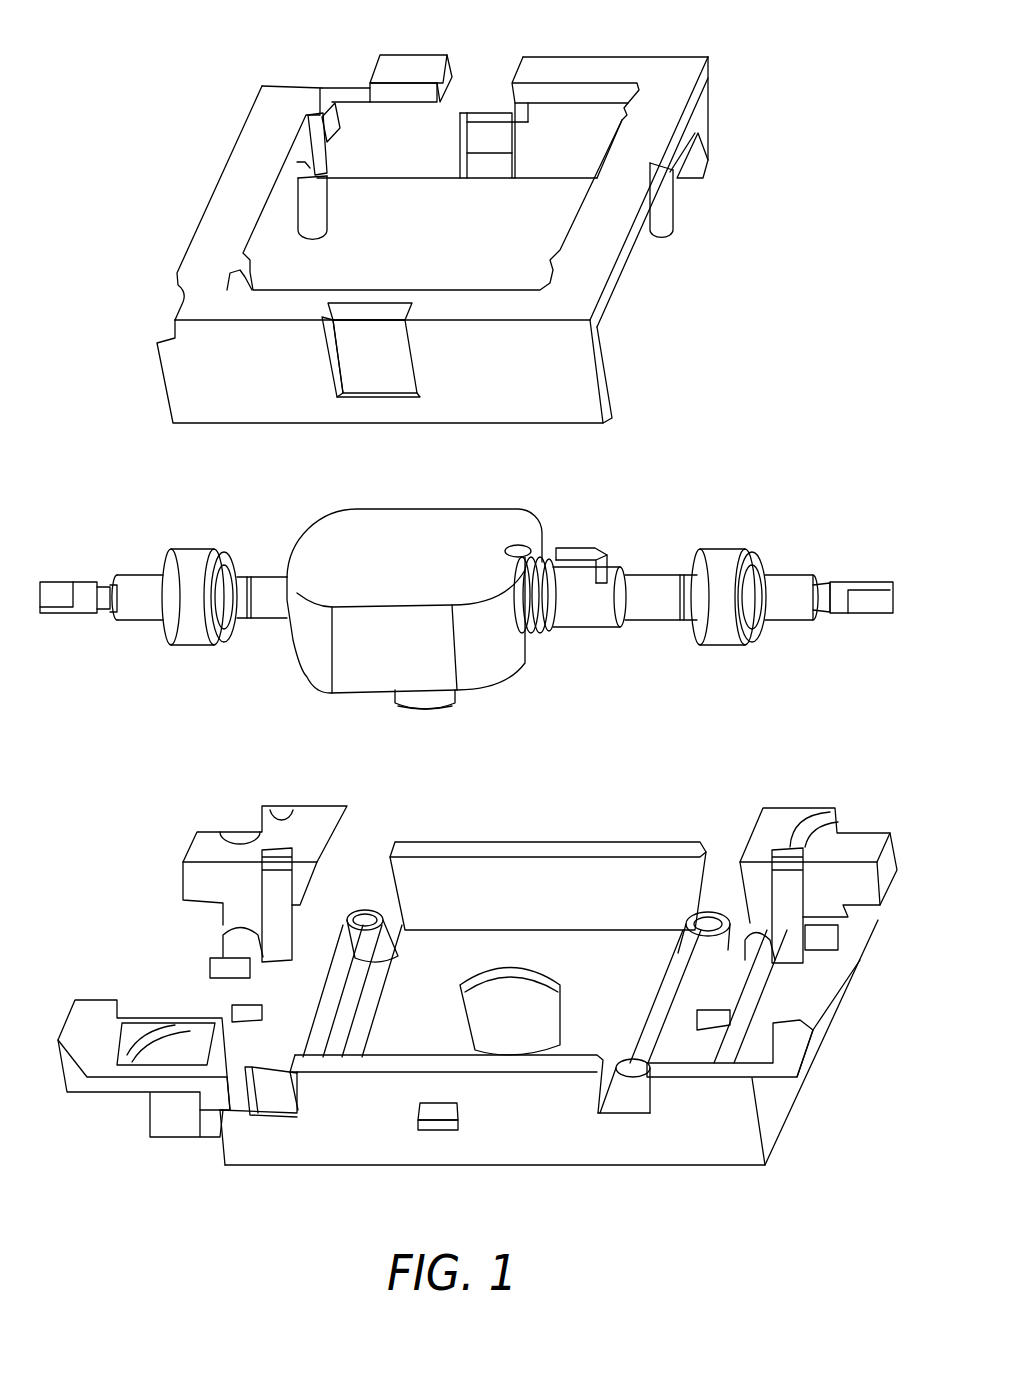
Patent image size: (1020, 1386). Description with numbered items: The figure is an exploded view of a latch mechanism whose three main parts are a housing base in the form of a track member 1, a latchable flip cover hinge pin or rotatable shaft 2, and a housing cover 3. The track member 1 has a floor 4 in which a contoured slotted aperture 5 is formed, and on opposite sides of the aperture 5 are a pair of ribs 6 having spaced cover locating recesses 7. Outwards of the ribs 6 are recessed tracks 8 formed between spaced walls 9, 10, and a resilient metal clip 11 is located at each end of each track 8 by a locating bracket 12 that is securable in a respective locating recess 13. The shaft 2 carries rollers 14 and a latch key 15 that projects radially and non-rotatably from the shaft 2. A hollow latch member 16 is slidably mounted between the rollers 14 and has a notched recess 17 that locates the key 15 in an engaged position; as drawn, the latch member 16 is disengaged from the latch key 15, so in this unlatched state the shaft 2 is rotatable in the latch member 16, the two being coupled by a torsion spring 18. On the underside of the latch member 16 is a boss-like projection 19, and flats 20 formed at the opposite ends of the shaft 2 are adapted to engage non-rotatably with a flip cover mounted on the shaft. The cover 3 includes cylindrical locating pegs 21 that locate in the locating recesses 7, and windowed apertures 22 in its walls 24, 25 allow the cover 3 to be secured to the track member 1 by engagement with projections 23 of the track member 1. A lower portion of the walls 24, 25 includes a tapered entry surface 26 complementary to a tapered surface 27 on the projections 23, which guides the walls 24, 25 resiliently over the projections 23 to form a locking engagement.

The track member 1 is at (300, 1147).
The rotatable shaft 2 is at (788, 580).
The housing cover 3 is at (680, 76).
The floor 4 is at (558, 1016).
The contoured slotted aperture 5 is at (495, 1052).
The ribs 6 is at (352, 1003).
The cover locating recesses 7 is at (368, 908).
The recessed tracks 8 is at (246, 1015).
The wall 9 is at (210, 960).
The wall 10 is at (305, 965).
The resilient metal clip 11 is at (228, 933).
The locating bracket 12 is at (272, 880).
The locating recess 13 is at (787, 847).
The rollers 14 is at (196, 560).
The latch key 15 is at (590, 553).
The latch member 16 is at (308, 652).
The notched recess 17 is at (506, 552).
The torsion spring 18 is at (548, 633).
The boss-like projection 19 is at (430, 705).
The flats 20 is at (60, 598).
The cylindrical locating pegs 21 is at (323, 215).
The windowed apertures 22 is at (486, 72).
The projections 23 is at (438, 1135).
The wall 24 is at (489, 408).
The wall 25 is at (536, 172).
The tapered entry surface 26 is at (489, 179).
The tapered surface 27 is at (458, 1111).